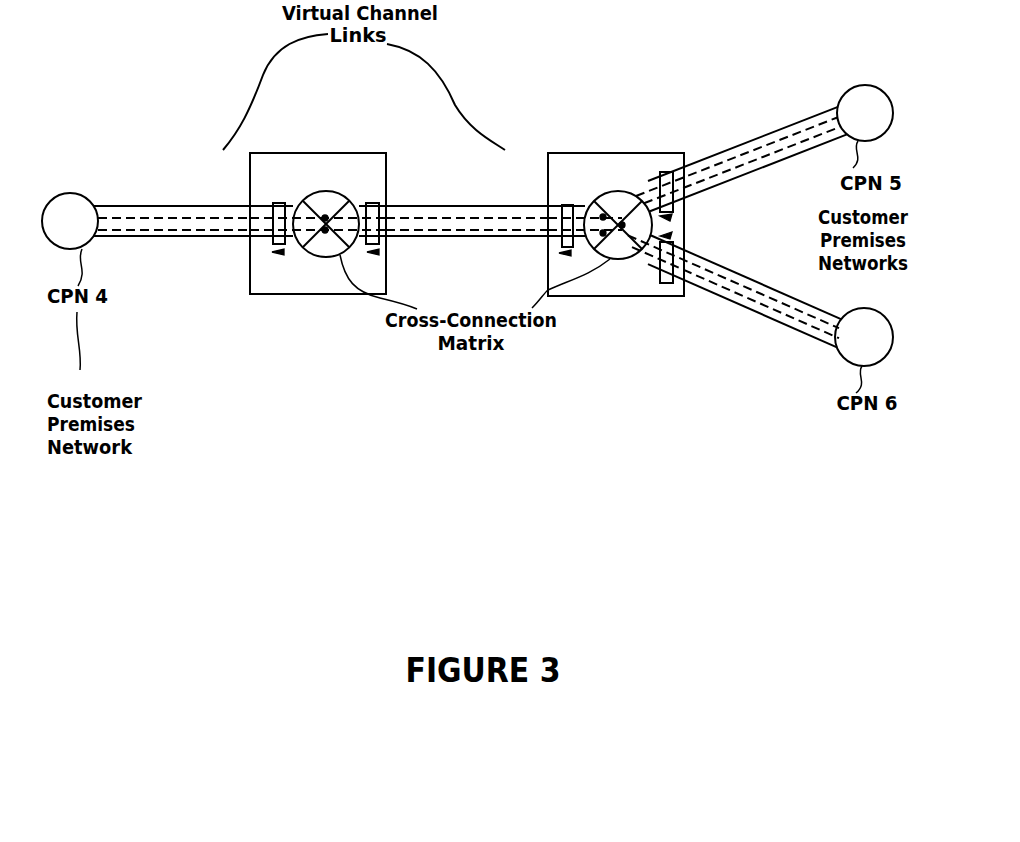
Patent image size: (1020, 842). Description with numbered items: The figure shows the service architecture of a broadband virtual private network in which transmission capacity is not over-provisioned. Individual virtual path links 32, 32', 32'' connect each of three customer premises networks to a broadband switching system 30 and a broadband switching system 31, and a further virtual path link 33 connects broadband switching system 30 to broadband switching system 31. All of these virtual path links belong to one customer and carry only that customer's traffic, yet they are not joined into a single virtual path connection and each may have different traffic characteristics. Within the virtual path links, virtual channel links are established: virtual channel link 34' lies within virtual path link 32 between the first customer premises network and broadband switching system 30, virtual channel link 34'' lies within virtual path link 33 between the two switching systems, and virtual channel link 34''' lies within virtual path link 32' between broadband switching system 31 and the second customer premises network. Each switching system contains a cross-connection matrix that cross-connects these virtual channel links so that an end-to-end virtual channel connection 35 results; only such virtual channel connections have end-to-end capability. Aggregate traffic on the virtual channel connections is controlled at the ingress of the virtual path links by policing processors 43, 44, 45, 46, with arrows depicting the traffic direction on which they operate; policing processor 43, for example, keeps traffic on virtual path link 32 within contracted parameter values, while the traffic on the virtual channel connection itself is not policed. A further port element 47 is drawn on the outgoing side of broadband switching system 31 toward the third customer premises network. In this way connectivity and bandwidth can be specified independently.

The broadband switching system 30 is at (318, 294).
The broadband switching system 31 is at (637, 296).
The virtual path link 32 is at (193, 166).
The virtual path link 32' is at (747, 142).
The virtual path link 32'' is at (734, 307).
The virtual path link 33 is at (462, 206).
The virtual channel link 34' is at (174, 193).
The virtual channel link 34'' is at (467, 193).
The virtual channel link 34''' is at (738, 157).
The virtual channel connection 35 is at (178, 231).
The policing processor 43 is at (279, 203).
The policing processor 44 is at (375, 203).
The policing processor 45 is at (565, 205).
The policing processor 46 is at (663, 172).
The port 47 is at (672, 283).